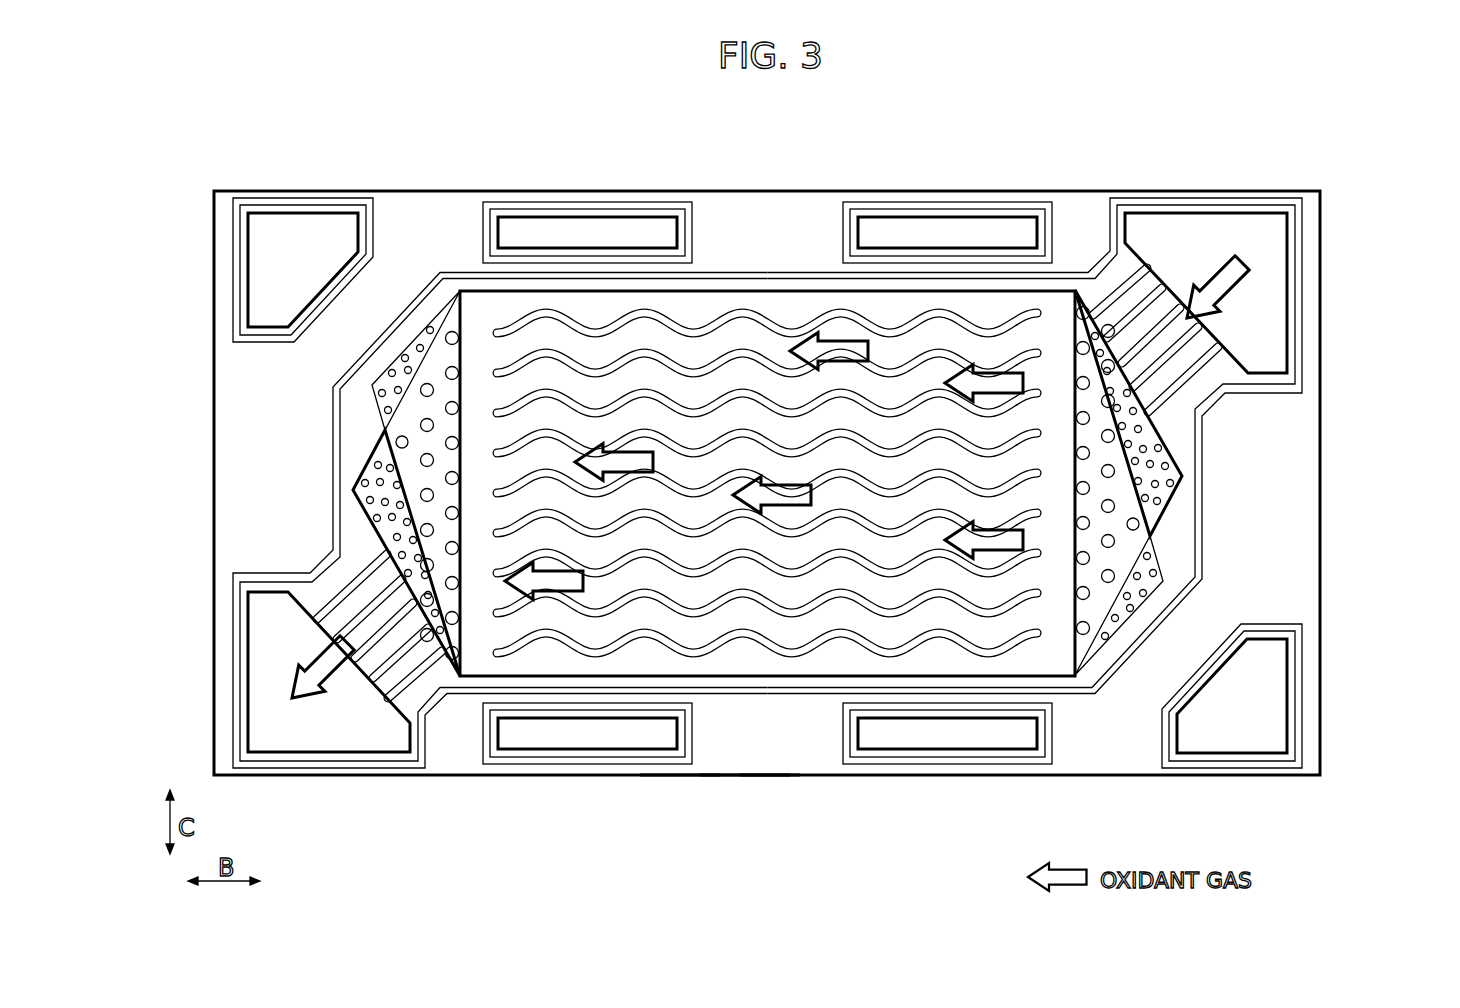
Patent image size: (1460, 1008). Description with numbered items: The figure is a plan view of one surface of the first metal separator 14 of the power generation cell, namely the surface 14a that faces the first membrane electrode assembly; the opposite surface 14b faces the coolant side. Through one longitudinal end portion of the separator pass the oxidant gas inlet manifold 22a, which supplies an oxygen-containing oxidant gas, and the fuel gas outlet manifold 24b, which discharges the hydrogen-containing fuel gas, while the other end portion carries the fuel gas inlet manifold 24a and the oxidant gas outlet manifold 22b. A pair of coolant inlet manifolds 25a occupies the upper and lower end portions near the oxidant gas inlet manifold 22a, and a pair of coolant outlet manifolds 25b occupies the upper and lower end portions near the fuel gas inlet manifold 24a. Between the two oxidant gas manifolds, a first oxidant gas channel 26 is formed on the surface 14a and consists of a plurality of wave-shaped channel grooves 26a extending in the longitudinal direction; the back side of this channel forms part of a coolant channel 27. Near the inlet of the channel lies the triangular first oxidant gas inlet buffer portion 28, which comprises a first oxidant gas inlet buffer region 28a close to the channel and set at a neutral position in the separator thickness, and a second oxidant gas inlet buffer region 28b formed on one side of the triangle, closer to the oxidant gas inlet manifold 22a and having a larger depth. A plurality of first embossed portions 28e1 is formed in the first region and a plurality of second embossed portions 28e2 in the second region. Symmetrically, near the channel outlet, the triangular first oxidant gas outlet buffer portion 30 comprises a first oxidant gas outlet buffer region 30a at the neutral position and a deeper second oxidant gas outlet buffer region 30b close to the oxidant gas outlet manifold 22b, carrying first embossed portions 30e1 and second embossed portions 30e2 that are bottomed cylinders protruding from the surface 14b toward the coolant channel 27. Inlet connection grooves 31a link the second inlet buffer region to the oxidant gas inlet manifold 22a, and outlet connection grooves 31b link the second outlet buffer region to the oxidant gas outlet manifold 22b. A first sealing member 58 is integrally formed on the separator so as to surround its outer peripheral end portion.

The first metal separator 14 is at (440, 130).
The surface 14a is at (744, 760).
The surface 14b is at (765, 753).
The oxidant gas inlet manifold 22a is at (1200, 233).
The oxidant gas outlet manifold 22b is at (287, 717).
The fuel gas inlet manifold 24a is at (283, 235).
The fuel gas outlet manifold 24b is at (1228, 723).
The coolant inlet manifolds 25a is at (937, 233).
The coolant outlet manifolds 25b is at (578, 233).
The first oxidant gas channel 26 is at (767, 490).
The wave-shaped channel grooves 26a is at (768, 400).
The coolant channel 27 is at (805, 605).
The first oxidant gas inlet buffer portion 28 is at (1266, 482).
The first oxidant gas inlet buffer region 28a is at (1246, 471).
The second oxidant gas inlet buffer region 28b is at (1245, 482).
The first embossed portions 28e1 is at (1110, 540).
The second embossed portions 28e2 is at (1140, 428).
The first oxidant gas outlet buffer portion 30 is at (271, 483).
The first oxidant gas outlet buffer region 30a is at (293, 496).
The second oxidant gas outlet buffer region 30b is at (294, 483).
The first embossed portions 30e1 is at (425, 420).
The second embossed portions 30e2 is at (397, 535).
The inlet connection grooves 31a is at (1118, 313).
The outlet connection grooves 31b is at (410, 658).
The first sealing member 58 is at (676, 780).